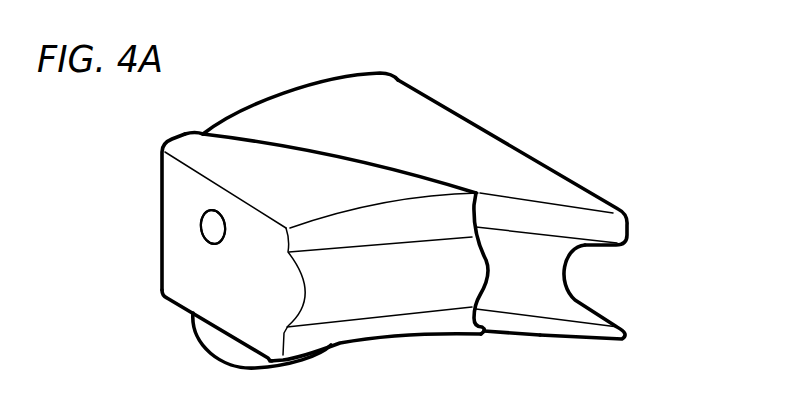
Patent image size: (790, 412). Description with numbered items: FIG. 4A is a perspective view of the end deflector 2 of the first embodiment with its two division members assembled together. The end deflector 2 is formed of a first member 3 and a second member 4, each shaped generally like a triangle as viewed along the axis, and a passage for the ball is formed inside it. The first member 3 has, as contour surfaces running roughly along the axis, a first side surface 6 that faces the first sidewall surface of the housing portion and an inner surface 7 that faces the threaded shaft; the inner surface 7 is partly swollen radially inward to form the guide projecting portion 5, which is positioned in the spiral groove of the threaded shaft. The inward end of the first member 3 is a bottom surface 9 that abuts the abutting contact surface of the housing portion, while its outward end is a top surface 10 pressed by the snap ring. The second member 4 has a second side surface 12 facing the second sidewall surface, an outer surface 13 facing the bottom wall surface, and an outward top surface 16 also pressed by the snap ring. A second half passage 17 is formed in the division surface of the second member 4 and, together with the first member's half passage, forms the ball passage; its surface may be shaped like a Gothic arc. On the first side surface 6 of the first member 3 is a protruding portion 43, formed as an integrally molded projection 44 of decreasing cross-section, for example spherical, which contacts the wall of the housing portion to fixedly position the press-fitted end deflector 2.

The end deflector 2 is at (148, 142).
The first member 3 is at (157, 190).
The second member 4 is at (558, 167).
The guide projecting portion 5 is at (408, 282).
The first side surface 6 is at (170, 268).
The inner surface 7 is at (351, 332).
The bottom surface 9 is at (437, 337).
The top surface 10 is at (217, 170).
The second side surface 12 is at (493, 133).
The outer surface 13 is at (291, 95).
The top surface 16 is at (420, 110).
The second half passage 17 is at (540, 261).
The projection 44 is at (208, 228).
The protruding portion 43 is at (213, 226).